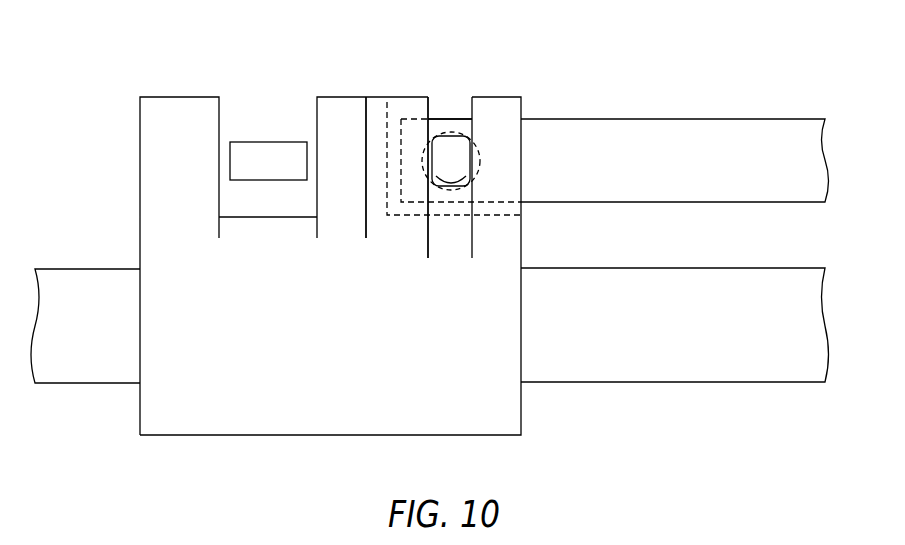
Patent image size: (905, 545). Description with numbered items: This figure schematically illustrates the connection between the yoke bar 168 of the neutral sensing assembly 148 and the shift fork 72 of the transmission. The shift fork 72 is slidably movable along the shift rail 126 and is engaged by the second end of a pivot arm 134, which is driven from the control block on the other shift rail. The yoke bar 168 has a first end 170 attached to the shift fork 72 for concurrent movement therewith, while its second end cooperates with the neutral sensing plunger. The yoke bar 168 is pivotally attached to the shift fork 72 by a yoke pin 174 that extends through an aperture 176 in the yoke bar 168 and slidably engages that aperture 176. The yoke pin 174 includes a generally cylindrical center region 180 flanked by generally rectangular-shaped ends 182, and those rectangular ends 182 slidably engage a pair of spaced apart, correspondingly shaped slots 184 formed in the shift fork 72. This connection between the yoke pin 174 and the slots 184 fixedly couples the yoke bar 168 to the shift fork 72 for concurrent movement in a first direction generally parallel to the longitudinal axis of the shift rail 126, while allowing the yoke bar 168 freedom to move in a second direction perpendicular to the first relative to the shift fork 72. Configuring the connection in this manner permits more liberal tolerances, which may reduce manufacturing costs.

The shift fork 72 is at (201, 436).
The shift rail 126 is at (643, 383).
The pivot arm 134 is at (258, 142).
The neutral sensing assembly 148 is at (672, 73).
The yoke bar 168 is at (550, 118).
The first end 170 is at (441, 118).
The yoke pin 174 is at (451, 134).
The aperture 176 is at (480, 162).
The center region 180 is at (451, 190).
The outer pocket 182 is at (430, 163).
The slots 184 is at (435, 102).